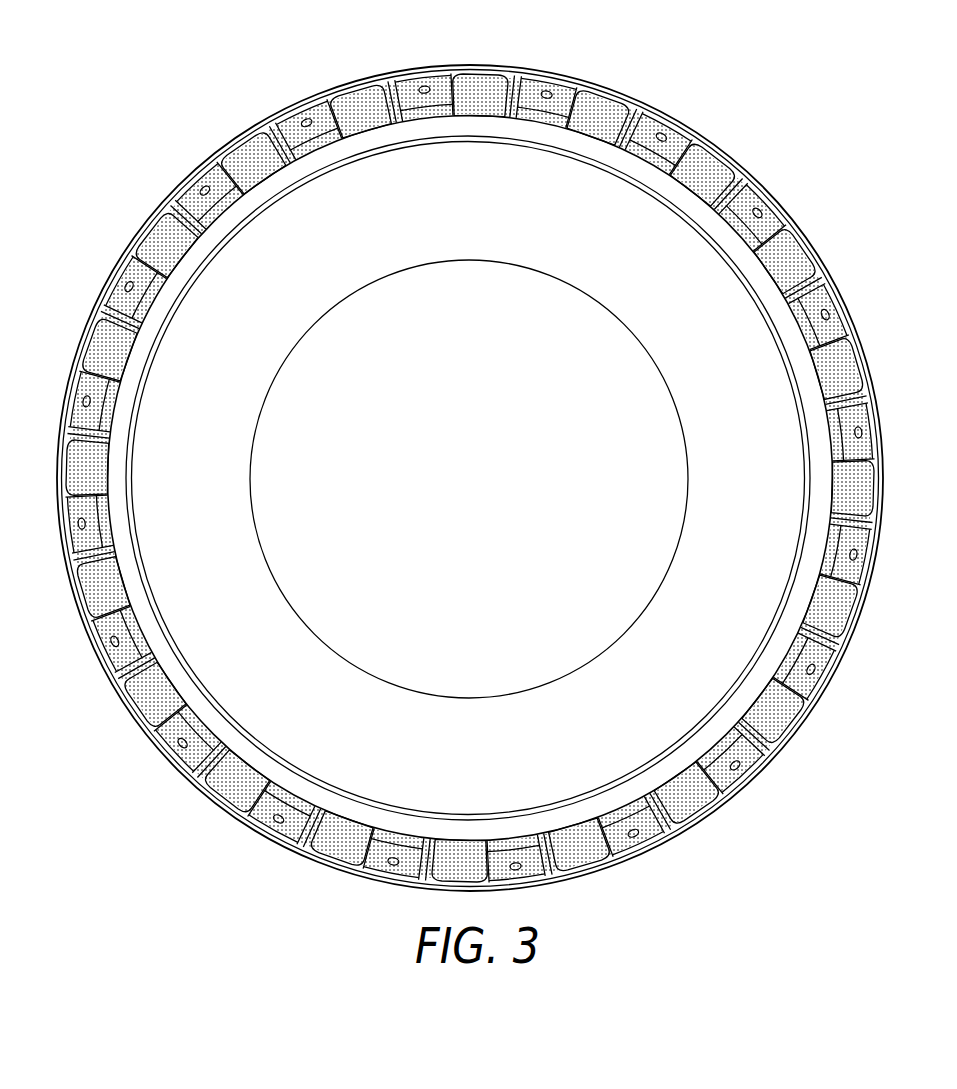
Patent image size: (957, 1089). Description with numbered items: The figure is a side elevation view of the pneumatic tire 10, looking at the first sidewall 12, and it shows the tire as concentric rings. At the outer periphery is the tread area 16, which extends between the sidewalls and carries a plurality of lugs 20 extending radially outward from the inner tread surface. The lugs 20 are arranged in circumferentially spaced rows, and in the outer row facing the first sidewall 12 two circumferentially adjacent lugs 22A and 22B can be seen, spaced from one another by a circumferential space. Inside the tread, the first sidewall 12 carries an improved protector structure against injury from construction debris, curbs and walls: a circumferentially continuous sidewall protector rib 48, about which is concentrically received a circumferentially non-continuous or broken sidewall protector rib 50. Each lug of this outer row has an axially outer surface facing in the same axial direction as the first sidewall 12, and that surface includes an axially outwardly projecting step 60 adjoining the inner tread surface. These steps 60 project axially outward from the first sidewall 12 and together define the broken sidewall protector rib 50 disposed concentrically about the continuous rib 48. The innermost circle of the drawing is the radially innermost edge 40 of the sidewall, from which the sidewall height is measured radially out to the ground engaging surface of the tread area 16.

The pneumatic tire 10 is at (470, 448).
The first sidewall 12 is at (510, 180).
The tread area 16 is at (470, 445).
The lugs 20 is at (468, 60).
The lug 22A is at (128, 282).
The lug 22B is at (240, 170).
The radially innermost edge 40 is at (252, 494).
The circumferentially continuous sidewall protector rib 48 is at (730, 240).
The circumferentially non-continuous sidewall protector rib 50 is at (470, 478).
The axially outwardly projecting step 60 is at (145, 293).